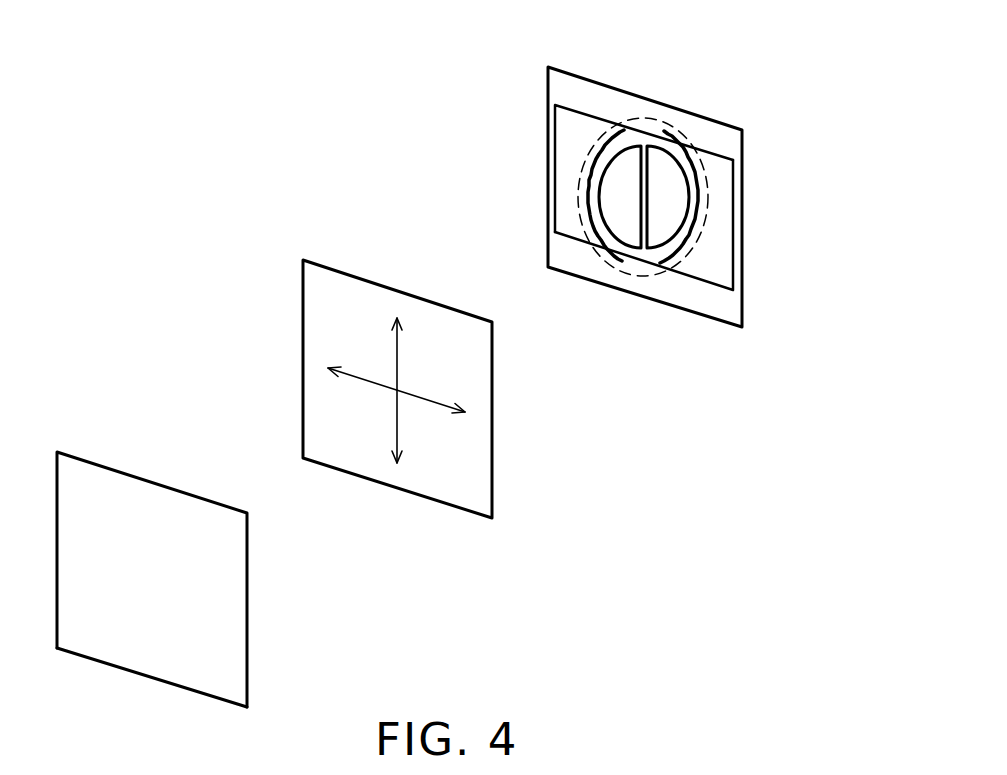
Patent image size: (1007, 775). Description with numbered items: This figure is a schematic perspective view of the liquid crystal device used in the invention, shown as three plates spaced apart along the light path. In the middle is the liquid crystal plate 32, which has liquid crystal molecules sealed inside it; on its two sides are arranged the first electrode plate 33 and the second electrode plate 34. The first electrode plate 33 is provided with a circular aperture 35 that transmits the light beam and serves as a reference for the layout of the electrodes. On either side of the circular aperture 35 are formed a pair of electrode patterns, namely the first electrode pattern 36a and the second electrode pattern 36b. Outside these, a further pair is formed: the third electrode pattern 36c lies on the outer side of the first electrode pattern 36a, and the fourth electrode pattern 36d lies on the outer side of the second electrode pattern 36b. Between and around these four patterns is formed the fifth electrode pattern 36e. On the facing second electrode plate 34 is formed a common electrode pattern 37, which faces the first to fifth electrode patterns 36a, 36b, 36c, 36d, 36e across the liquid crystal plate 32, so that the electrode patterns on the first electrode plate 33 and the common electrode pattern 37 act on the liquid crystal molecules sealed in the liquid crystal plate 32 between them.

The liquid crystal plate 32 is at (497, 422).
The first electrode plate 33 is at (611, 84).
The second electrode plate 34 is at (121, 472).
The circular aperture 35 is at (676, 128).
The first electrode pattern 36a is at (618, 210).
The second electrode pattern 36b is at (668, 218).
The third electrode pattern 36c is at (578, 139).
The fourth electrode pattern 36d is at (723, 190).
The fifth electrode pattern 36e is at (640, 287).
The common electrode pattern 37 is at (143, 650).